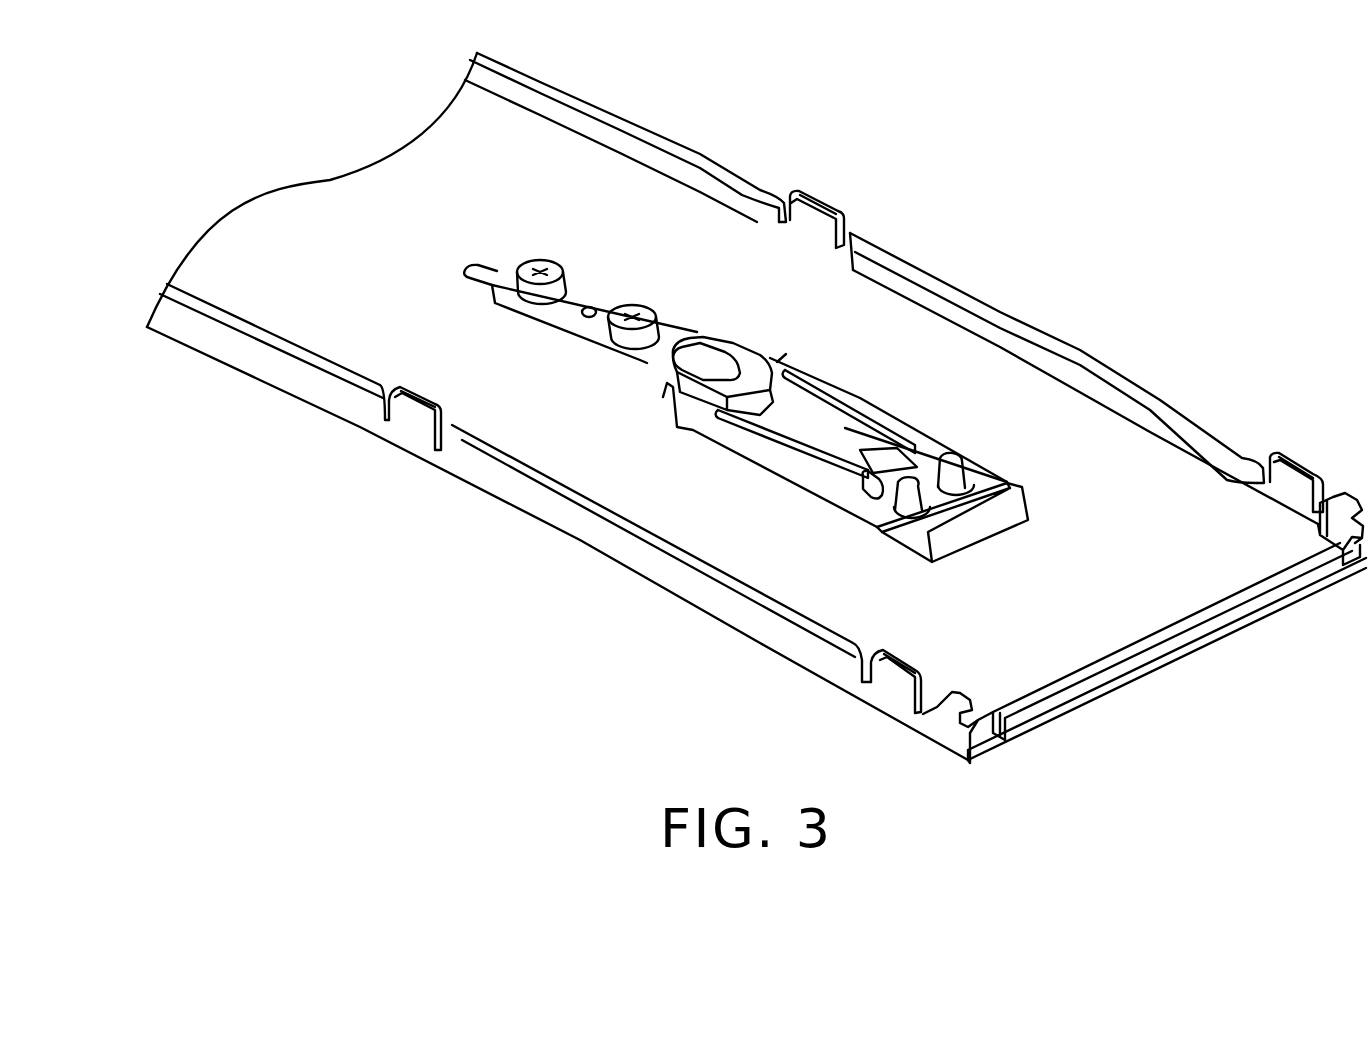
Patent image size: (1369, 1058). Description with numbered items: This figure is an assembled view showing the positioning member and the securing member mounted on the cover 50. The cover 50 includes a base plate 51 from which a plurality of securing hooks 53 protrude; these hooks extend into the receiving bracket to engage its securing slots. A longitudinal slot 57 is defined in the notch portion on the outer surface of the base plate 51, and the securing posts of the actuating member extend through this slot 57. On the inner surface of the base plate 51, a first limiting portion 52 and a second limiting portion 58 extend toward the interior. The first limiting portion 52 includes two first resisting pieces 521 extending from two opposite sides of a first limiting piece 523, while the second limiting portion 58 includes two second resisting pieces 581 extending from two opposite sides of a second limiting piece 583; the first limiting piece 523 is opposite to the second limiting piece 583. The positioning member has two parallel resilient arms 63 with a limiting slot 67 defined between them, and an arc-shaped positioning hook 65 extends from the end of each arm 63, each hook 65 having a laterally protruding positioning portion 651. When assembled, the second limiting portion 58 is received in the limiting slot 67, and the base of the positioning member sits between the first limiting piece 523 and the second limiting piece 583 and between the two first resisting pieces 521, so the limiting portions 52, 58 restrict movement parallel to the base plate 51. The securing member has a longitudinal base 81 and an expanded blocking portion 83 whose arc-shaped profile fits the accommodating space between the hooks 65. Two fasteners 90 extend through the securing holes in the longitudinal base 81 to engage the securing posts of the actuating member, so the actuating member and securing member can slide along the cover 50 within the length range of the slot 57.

The cover 50 is at (1213, 413).
The base plate 51 is at (1043, 417).
The first limiting portion 52 is at (756, 529).
The securing hooks 53 is at (817, 217).
The longitudinal slot 57 is at (483, 273).
The second limiting portion 58 is at (754, 565).
The second resisting pieces 581 is at (893, 497).
The second limiting piece 583 is at (900, 515).
The resilient arms 63 is at (913, 437).
The positioning hook 65 is at (815, 438).
The positioning portion 651 is at (768, 360).
The limiting slot 67 is at (813, 432).
The longitudinal base 81 is at (500, 216).
The blocking portion 83 is at (743, 350).
The fasteners 90 is at (547, 268).
The first resisting pieces 521 is at (935, 562).
The first limiting piece 523 is at (1003, 520).